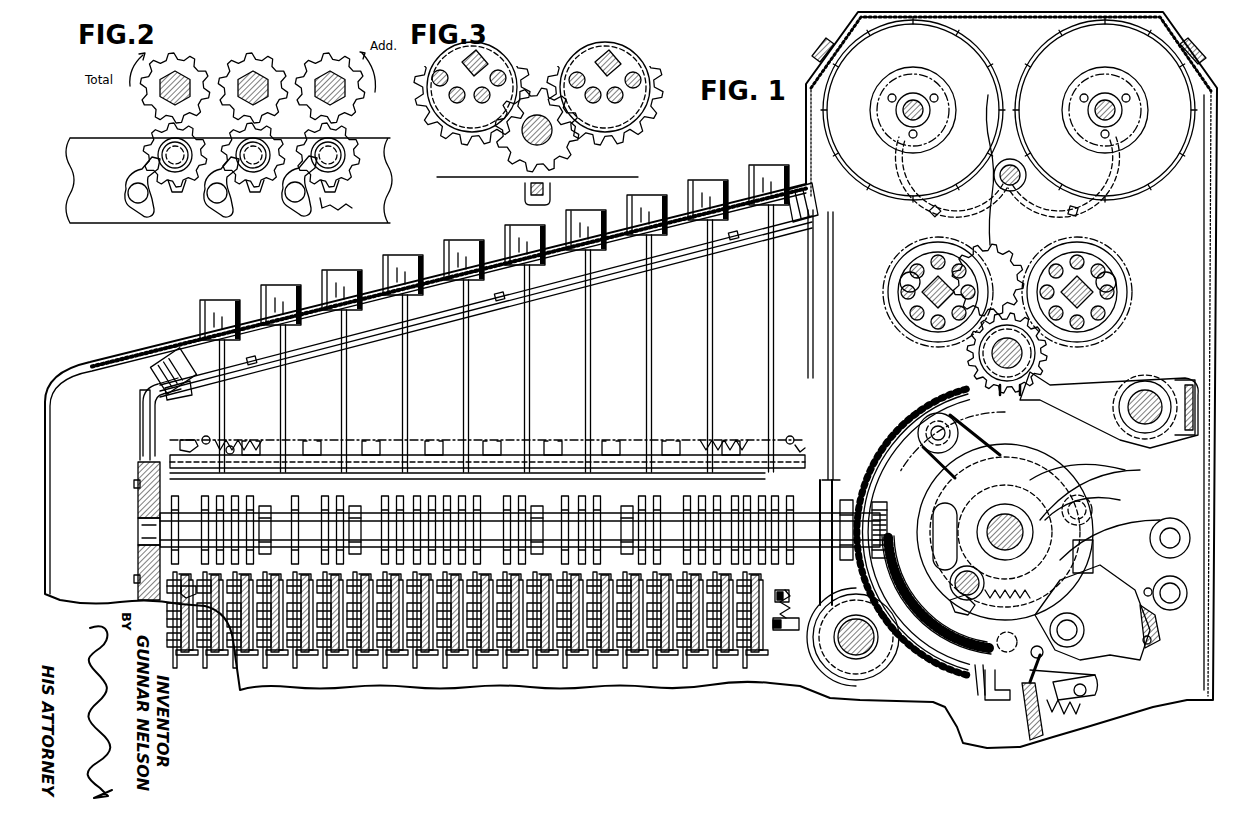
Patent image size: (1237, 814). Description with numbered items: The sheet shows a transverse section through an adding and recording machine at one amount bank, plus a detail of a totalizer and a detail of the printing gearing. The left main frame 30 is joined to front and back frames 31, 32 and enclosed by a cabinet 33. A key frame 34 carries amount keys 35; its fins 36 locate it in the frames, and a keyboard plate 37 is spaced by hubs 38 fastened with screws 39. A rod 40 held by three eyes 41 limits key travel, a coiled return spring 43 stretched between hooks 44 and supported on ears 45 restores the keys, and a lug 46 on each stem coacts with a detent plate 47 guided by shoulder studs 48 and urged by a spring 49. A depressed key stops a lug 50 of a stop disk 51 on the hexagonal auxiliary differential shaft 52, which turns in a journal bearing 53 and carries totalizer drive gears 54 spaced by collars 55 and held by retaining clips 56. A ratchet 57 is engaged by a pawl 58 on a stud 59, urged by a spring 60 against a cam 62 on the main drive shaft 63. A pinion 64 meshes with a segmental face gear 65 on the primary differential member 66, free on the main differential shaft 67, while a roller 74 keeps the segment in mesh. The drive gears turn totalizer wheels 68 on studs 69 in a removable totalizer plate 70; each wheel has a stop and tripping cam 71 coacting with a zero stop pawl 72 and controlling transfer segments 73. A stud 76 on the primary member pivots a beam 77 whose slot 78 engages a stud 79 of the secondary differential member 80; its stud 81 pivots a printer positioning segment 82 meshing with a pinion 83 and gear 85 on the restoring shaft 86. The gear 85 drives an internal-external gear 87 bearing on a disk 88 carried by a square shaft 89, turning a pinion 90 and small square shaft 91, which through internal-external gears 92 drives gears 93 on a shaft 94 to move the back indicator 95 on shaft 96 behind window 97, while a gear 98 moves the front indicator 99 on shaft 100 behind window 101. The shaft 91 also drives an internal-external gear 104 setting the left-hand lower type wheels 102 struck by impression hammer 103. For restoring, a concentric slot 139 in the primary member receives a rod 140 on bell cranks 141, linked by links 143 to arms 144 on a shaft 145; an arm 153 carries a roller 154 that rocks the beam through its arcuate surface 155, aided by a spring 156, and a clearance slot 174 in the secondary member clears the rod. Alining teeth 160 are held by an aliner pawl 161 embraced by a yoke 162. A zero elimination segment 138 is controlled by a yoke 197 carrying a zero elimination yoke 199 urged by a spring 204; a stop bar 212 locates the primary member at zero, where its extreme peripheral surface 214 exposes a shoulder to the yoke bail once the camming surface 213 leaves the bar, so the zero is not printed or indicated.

In FIG. 1, the main frames 30 is at (880, 702).
In FIG. 1, the front frame 31 is at (142, 412).
In FIG. 1, the back frame 32 is at (815, 246).
In FIG. 1, the cabinet 33 is at (1203, 184).
In FIG. 1, the key frame 34 is at (835, 327).
In FIG. 1, the amount keys 35 is at (262, 287).
In FIG. 1, the fins 36 is at (139, 440).
In FIG. 1, the keyboard plate 37 is at (215, 365).
In FIG. 1, the hubs 38 is at (152, 378).
In FIG. 1, the screws 39 is at (158, 345).
In FIG. 1, the rod 40 is at (353, 345).
In FIG. 1, the eyes 41 is at (254, 364).
In FIG. 1, the return spring 43 is at (310, 428).
In FIG. 1, the hooks 44 is at (190, 432).
In FIG. 1, the ears 45 is at (366, 430).
In FIG. 1, the lug 46 is at (455, 440).
In FIG. 1, the detent plate 47 is at (625, 438).
In FIG. 1, the shoulder studs 48 is at (256, 484).
In FIG. 1, the spring 49 is at (178, 445).
In FIG. 1, the lug 50 is at (510, 560).
In FIG. 1, the stop disk 51 is at (520, 500).
In FIG. 2, the auxiliary differential shaft 52 is at (185, 82).
In FIG. 1, the auxiliary differential shaft 52 is at (137, 530).
In FIG. 1, the journal bearing 53 is at (137, 560).
In FIG. 2, the totalizer drive gears 54 is at (172, 58).
In FIG. 1, the totalizer drive gears 54 is at (182, 510).
In FIG. 1, the spacing collars 55 is at (645, 510).
In FIG. 1, the retaining clips 56 is at (137, 498).
In FIG. 1, the ratchet 57 is at (798, 447).
In FIG. 1, the pawl 58 is at (870, 560).
In FIG. 1, the stud 59 is at (780, 606).
In FIG. 1, the spring 60 is at (777, 626).
In FIG. 1, the cam 62 is at (818, 655).
In FIG. 1, the main drive shaft 63 is at (830, 668).
In FIG. 1, the pinion 64 is at (942, 536).
In FIG. 1, the segmental face gear 65 is at (936, 557).
In FIG. 1, the primary differential member 66 is at (975, 680).
In FIG. 1, the main differential shaft 67 is at (1005, 514).
In FIG. 2, the totalizer wheels 68 is at (165, 138).
In FIG. 1, the totalizer wheels 68 is at (777, 590).
In FIG. 2, the studs 69 is at (158, 152).
In FIG. 2, the totalizer plate 70 is at (112, 230).
In FIG. 1, the totalizer plate 70 is at (355, 655).
In FIG. 2, the combined stop and tripping cam 71 is at (388, 148).
In FIG. 1, the combined stop and tripping cam 71 is at (320, 585).
In FIG. 2, the zero stop pawls 72 is at (120, 196).
In FIG. 1, the zero stop pawls 72 is at (325, 655).
In FIG. 2, the transfer segments 73 is at (347, 208).
In FIG. 1, the roller 74 is at (845, 500).
In FIG. 1, the stud 76 is at (1085, 655).
In FIG. 1, the beam 77 is at (1075, 468).
In FIG. 1, the slot 78 is at (970, 432).
In FIG. 1, the stud 79 is at (935, 413).
In FIG. 1, the secondary differential member 80 is at (1040, 408).
In FIG. 1, the stud 81 is at (1041, 657).
In FIG. 1, the printer positioning segment 82 is at (1060, 450).
In FIG. 1, the pinion 83 is at (982, 378).
In FIG. 1, the gear 85 is at (1040, 357).
In FIG. 3, the secondary member restoring shaft 86 is at (552, 130).
In FIG. 1, the secondary member restoring shaft 86 is at (990, 353).
In FIG. 1, the internal-external gear 87 is at (1065, 345).
In FIG. 1, the disk 88 is at (1087, 248).
In FIG. 3, the square shaft 89 is at (603, 55).
In FIG. 1, the square shaft 89 is at (1085, 300).
In FIG. 1, the pinion 90 is at (1110, 276).
In FIG. 3, the square shaft 91 is at (634, 75).
In FIG. 1, the square shaft 91 is at (1108, 282).
In FIG. 1, the internal-external gears 92 is at (988, 280).
In FIG. 1, the gears 93 is at (1078, 212).
In FIG. 1, the shaft 94 is at (1012, 192).
In FIG. 1, the back indicator 95 is at (1138, 190).
In FIG. 1, the shaft 96 is at (1110, 104).
In FIG. 1, the window 97 is at (1198, 64).
In FIG. 1, the gear 98 is at (934, 212).
In FIG. 1, the front indicator 99 is at (884, 190).
In FIG. 1, the shaft 100 is at (910, 102).
In FIG. 1, the window 101 is at (812, 55).
In FIG. 3, the left-hand lower type wheels 102 is at (578, 150).
In FIG. 3, the impression hammer 103 is at (524, 190).
In FIG. 3, the internal-external gear 104 is at (640, 105).
In FIG. 1, the zero elimination segment 138 is at (985, 690).
In FIG. 1, the concentric slot 139 is at (980, 580).
In FIG. 1, the rod 140 is at (958, 608).
In FIG. 1, the bell cranks 141 is at (936, 595).
In FIG. 1, the links 143 is at (1093, 554).
In FIG. 1, the arms 144 is at (1175, 605).
In FIG. 1, the shaft 145 is at (1148, 390).
In FIG. 1, the arm 153 is at (1135, 490).
In FIG. 1, the roller 154 is at (1172, 528).
In FIG. 1, the external arcuate surface 155 is at (1118, 458).
In FIG. 1, the spring 156 is at (1006, 630).
In FIG. 1, the alining teeth 160 is at (904, 418).
In FIG. 1, the aliner pawl 161 is at (1080, 372).
In FIG. 1, the yoke 162 is at (1190, 370).
In FIG. 1, the clearance slot 174 is at (985, 452).
In FIG. 1, the yoke 197 is at (1095, 675).
In FIG. 1, the zero elimination yoke 199 is at (1022, 700).
In FIG. 1, the spring 204 is at (1080, 710).
In FIG. 1, the stop bar 212 is at (1158, 642).
In FIG. 1, the camming surface 213 is at (1100, 690).
In FIG. 1, the extreme peripheral surface 214 is at (1145, 600).